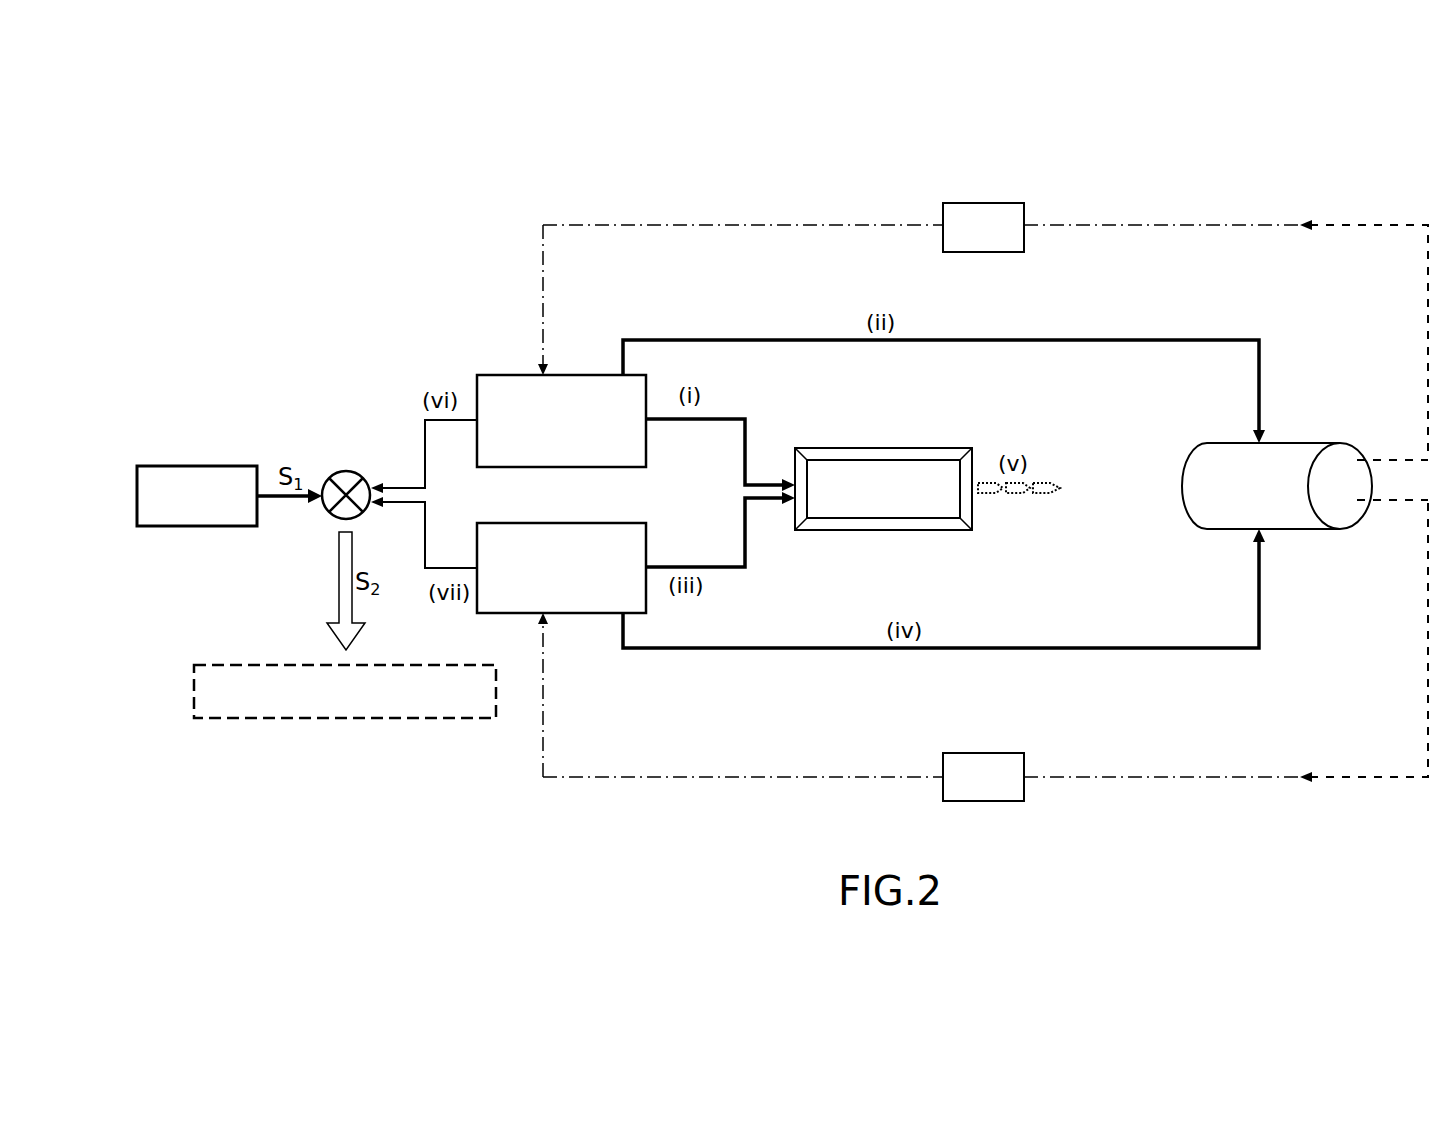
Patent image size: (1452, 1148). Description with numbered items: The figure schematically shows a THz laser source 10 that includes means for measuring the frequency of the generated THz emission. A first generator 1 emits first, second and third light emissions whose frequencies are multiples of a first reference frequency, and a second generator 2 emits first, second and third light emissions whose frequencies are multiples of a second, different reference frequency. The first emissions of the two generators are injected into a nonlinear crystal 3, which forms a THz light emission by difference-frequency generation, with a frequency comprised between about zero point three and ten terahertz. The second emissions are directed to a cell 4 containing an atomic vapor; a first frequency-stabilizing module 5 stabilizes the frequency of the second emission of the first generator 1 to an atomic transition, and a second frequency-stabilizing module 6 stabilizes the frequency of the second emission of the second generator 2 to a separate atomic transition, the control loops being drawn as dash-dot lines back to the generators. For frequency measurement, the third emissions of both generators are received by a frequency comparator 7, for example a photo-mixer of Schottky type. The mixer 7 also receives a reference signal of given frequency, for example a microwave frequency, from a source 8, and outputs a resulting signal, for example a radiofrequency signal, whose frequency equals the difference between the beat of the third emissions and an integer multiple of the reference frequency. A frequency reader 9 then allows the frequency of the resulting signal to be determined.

The first generator 1 is at (561, 421).
The second generator 2 is at (561, 568).
The nonlinear crystal 3 is at (883, 489).
The cell 4 is at (1277, 486).
The first frequency-stabilizing module 5 is at (1024, 208).
The second frequency-stabilizing module 6 is at (1024, 801).
The frequency comparator 7 is at (346, 464).
The source 8 is at (197, 496).
The frequency reader 9 is at (345, 691).
The THz laser source 10 is at (1238, 135).